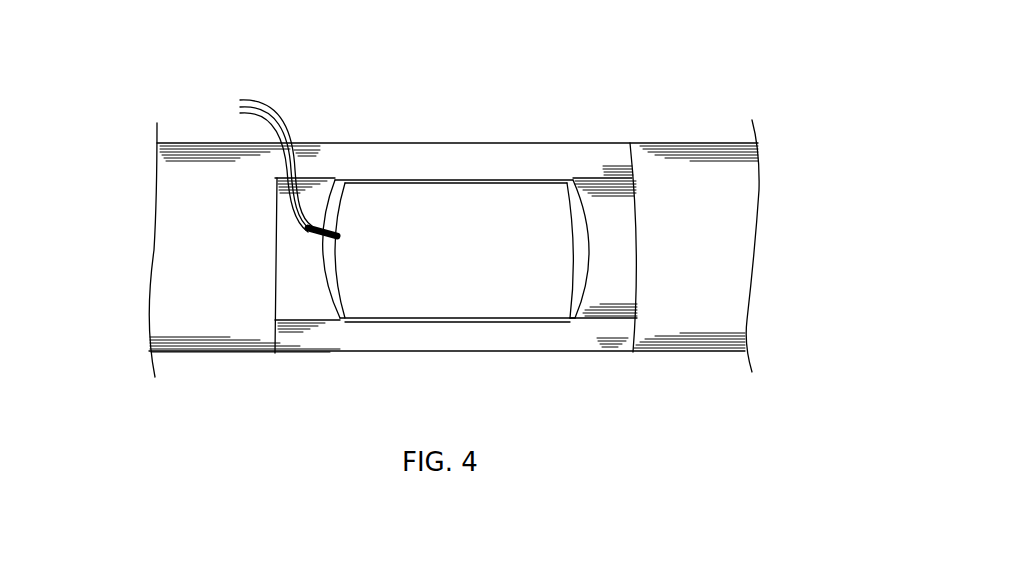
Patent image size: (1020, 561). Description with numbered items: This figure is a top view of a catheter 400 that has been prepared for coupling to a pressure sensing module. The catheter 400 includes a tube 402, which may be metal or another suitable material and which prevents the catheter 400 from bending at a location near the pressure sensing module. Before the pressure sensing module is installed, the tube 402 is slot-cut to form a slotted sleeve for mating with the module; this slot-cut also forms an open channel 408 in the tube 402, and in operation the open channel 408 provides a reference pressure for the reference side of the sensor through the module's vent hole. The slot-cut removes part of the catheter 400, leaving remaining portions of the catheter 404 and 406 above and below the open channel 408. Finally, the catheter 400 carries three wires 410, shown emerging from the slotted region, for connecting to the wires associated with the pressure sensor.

The catheter 400 is at (700, 64).
The tube 402 is at (593, 210).
The remaining portion of the catheter 404 is at (462, 158).
The remaining portion of the catheter 406 is at (367, 337).
The open channel 408 is at (509, 297).
The wires 410 is at (250, 97).